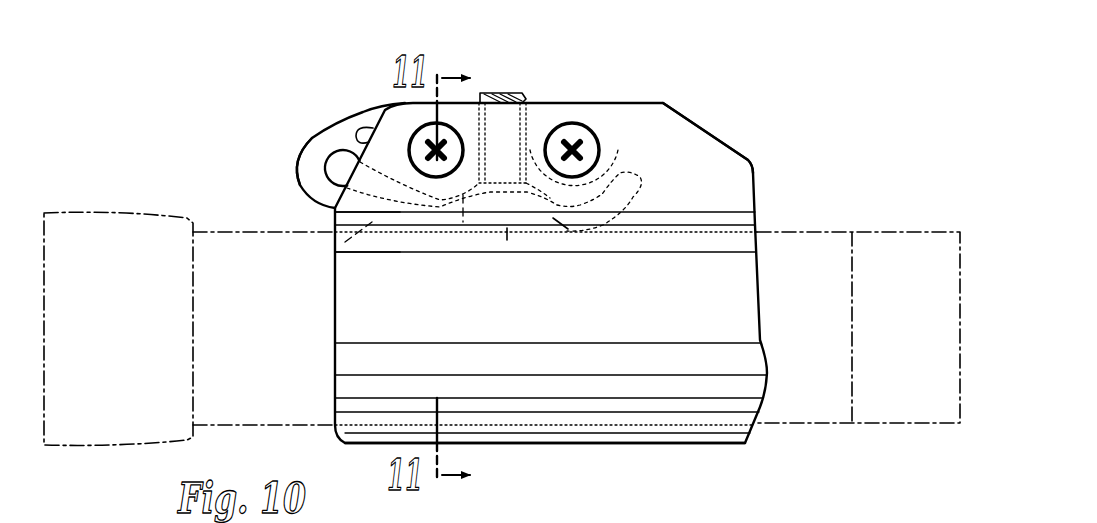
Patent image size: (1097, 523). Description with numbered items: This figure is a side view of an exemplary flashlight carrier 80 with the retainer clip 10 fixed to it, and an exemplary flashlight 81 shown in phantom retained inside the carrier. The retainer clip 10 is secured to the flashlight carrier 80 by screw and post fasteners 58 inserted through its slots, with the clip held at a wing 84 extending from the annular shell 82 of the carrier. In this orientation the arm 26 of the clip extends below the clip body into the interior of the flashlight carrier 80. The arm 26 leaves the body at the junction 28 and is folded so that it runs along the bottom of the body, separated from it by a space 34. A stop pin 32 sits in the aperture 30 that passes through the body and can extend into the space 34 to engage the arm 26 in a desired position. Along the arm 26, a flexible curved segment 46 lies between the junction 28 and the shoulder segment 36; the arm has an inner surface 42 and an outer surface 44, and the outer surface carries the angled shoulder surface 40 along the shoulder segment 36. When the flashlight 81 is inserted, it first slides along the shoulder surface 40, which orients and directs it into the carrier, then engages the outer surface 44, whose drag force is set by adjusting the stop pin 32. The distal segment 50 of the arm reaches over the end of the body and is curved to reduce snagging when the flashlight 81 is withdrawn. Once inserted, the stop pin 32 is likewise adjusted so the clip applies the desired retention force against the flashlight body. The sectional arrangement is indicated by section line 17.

The retainer clip 10 is at (293, 134).
The cam plate 17 is at (585, 118).
The arm 26 is at (553, 218).
The junction 28 is at (366, 111).
The aperture 30 is at (537, 117).
The stop pin 32 is at (494, 92).
The space 34 is at (462, 255).
The shoulder segment 36 is at (336, 216).
The shoulder surface 40 is at (338, 252).
The inner surface 42 is at (548, 120).
The outer surface 44 is at (508, 228).
The curved segment 46 is at (296, 166).
The distal segment 50 is at (647, 178).
The retainer means 58 is at (416, 130).
The flashlight carrier 80 is at (697, 101).
The flashlight 81 is at (249, 425).
The annular shell 82 is at (616, 445).
The wing 84 is at (753, 172).